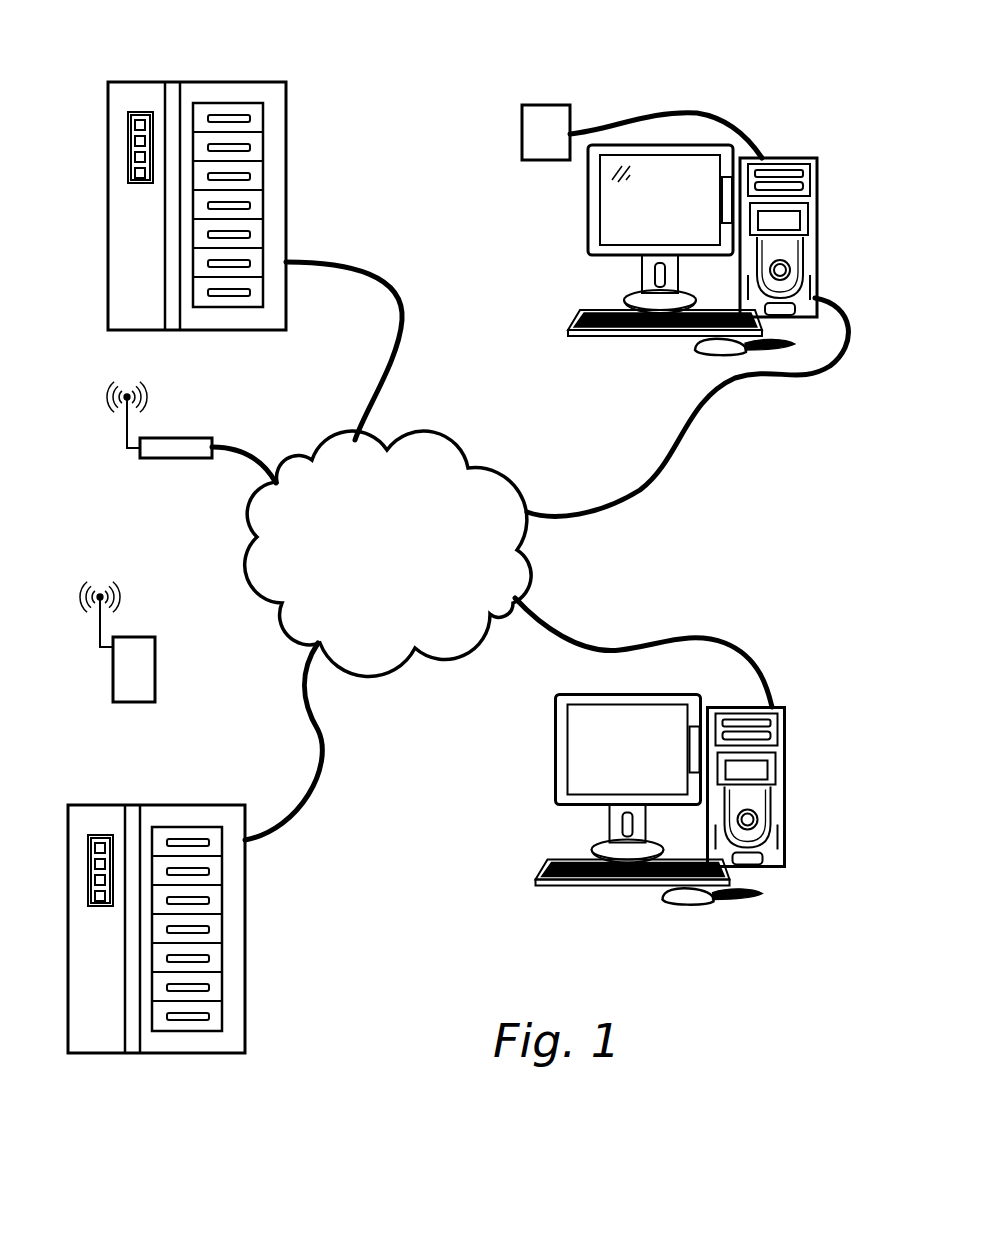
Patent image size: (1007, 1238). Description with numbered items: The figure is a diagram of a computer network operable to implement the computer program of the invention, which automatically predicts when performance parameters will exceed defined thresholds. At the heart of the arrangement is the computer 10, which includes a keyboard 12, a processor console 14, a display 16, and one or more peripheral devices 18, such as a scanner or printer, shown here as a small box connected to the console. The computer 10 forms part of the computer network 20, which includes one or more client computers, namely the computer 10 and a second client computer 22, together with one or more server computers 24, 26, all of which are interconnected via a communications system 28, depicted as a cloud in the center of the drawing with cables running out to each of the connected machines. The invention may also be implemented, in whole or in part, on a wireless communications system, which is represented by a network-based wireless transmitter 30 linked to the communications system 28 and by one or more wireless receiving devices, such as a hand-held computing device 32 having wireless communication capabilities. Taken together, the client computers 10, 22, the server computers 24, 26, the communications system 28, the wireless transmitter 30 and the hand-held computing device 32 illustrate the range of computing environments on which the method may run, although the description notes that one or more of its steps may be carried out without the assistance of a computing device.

The computer 10 is at (752, 100).
The keyboard 12 is at (645, 338).
The processor console 14 is at (817, 195).
The display 16 is at (588, 212).
The peripheral device 18 is at (522, 134).
The computer network 20 is at (678, 560).
The client computer 22 is at (785, 750).
The server computer 24 is at (205, 80).
The server computer 26 is at (242, 945).
The communications system 28 is at (443, 645).
The network-based wireless transmitter 30 is at (182, 438).
The hand-held computing device 32 is at (145, 672).